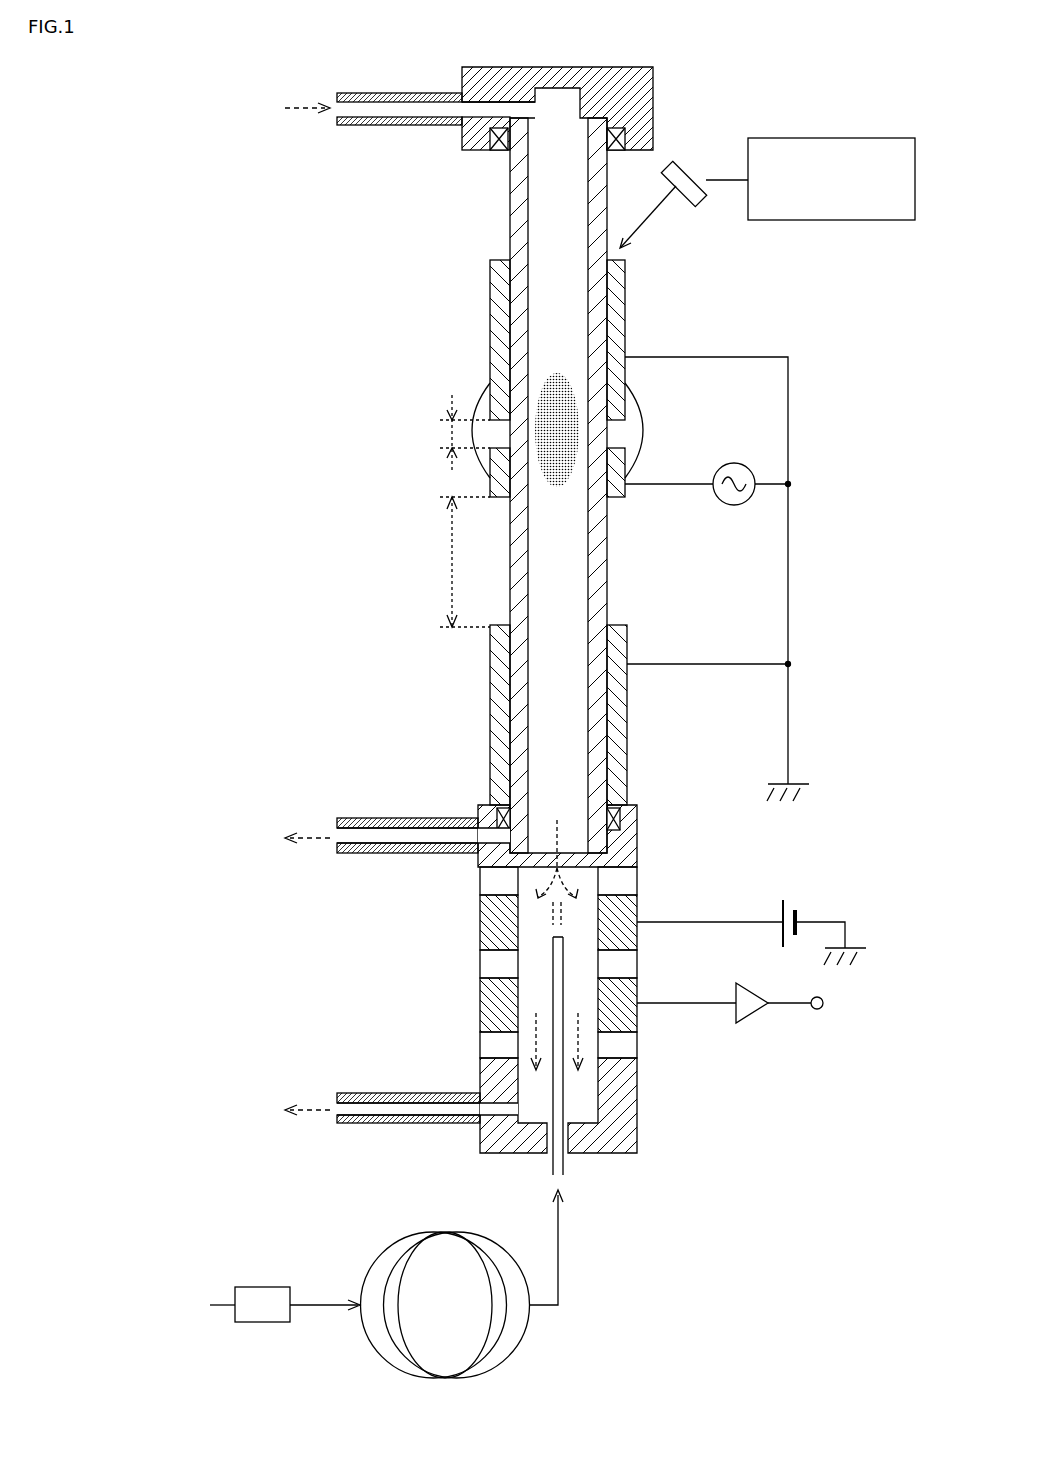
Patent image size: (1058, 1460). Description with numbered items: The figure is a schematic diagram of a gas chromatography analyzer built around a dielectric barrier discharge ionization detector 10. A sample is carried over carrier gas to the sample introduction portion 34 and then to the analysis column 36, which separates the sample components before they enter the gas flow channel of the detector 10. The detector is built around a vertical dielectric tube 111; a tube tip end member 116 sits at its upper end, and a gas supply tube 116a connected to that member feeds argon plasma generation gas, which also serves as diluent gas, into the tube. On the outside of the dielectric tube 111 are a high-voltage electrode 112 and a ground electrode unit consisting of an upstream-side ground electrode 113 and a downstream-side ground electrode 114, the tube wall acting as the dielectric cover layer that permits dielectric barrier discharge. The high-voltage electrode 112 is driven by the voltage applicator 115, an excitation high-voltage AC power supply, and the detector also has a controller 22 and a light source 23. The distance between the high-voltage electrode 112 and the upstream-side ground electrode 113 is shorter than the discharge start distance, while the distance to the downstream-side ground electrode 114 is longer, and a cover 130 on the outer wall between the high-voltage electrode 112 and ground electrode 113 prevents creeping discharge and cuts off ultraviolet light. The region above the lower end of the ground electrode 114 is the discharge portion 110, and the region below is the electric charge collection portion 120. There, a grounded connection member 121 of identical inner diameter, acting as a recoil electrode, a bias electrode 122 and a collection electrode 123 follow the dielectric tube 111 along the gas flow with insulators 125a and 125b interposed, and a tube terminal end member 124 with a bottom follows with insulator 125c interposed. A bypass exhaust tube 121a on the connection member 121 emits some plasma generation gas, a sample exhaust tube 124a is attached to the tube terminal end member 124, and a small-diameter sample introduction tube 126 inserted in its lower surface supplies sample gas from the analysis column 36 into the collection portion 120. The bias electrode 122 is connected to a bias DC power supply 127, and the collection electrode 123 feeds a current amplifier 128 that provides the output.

The dielectric barrier discharge ionization detector 10 is at (322, 53).
The discharge portion 110 is at (152, 805).
The dielectric tube 111 is at (520, 212).
The high-voltage electrode 112 is at (627, 489).
The ground electrode 113 is at (627, 279).
The ground electrode 114 is at (627, 646).
The voltage applicator 115 is at (734, 462).
The tube tip end member 116 is at (653, 85).
The gas supply tube 116a is at (355, 93).
The electric charge collection portion 120 is at (152, 815).
The connection member 121 is at (637, 845).
The bypass exhaust tube 121a is at (356, 818).
The bias electrode 122 is at (637, 928).
The collection electrode 123 is at (637, 1008).
The tube terminal end member 124 is at (637, 1103).
The sample exhaust tube 124a is at (357, 1093).
The insulator 125a is at (480, 884).
The insulator 125b is at (480, 966).
The insulator 125c is at (480, 1046).
The sample introduction tube 126 is at (552, 1087).
The bias direct-current power supply 127 is at (789, 900).
The current amplifier 128 is at (748, 1020).
The cover 130 is at (645, 406).
The controller 22 is at (834, 138).
The light source 23 is at (673, 160).
The sample introduction portion 34 is at (262, 1287).
The analysis column 36 is at (466, 1232).